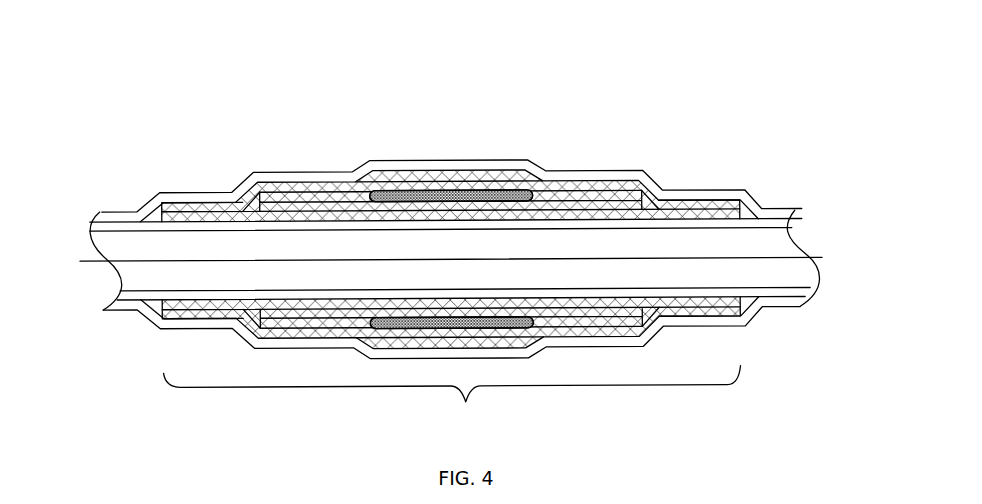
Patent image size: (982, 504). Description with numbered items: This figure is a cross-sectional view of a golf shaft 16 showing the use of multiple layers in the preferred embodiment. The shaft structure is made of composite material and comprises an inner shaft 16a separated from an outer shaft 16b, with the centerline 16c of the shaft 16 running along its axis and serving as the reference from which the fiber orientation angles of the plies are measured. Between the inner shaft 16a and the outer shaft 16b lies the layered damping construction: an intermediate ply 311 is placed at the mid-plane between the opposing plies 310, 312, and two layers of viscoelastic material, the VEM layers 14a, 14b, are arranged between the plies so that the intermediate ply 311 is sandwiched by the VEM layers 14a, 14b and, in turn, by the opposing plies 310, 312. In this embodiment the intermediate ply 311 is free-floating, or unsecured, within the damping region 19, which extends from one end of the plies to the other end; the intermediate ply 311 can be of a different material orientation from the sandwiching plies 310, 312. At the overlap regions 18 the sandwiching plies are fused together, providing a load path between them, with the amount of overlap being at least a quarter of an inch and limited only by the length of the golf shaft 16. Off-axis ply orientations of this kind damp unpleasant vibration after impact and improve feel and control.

The shaft 16 is at (471, 212).
The inner shaft 16a is at (787, 220).
The outer shaft 16b is at (782, 211).
The centerline 16c is at (95, 261).
The overlap regions 18 is at (195, 202).
The VEM layer 14a is at (558, 192).
The VEM layer 14b is at (580, 203).
The opposing ply 310 is at (698, 200).
The intermediate ply 311 is at (452, 190).
The opposing ply 312 is at (730, 298).
The damping region 19 is at (452, 398).